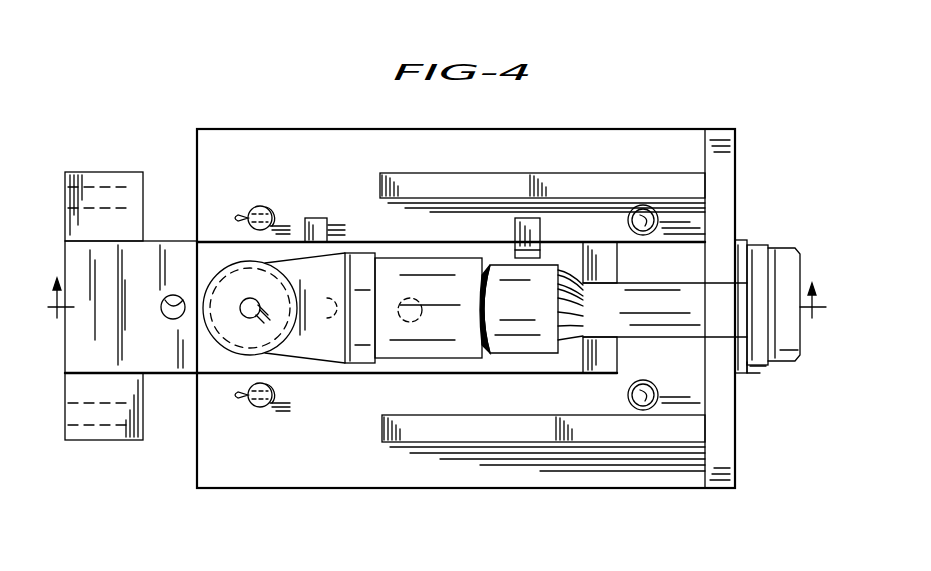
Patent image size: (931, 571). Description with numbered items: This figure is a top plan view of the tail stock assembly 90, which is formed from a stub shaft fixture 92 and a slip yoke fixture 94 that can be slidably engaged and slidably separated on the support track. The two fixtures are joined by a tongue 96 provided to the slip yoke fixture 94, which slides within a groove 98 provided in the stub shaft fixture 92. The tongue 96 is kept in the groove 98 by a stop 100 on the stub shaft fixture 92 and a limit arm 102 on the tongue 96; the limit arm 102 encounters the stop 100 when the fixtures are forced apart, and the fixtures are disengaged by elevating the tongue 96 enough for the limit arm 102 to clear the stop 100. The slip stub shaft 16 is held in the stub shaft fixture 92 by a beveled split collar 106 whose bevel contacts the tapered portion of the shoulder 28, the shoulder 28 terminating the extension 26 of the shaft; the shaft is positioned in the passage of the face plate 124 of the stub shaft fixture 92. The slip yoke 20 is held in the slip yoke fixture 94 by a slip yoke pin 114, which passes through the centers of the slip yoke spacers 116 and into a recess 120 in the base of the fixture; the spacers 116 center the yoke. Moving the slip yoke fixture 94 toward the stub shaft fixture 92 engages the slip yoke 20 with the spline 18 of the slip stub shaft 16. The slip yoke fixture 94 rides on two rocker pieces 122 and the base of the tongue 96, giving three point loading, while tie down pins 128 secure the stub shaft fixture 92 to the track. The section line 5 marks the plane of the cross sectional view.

The tail stock assembly 90 is at (188, 76).
The stub shaft fixture 92 is at (345, 492).
The slip yoke fixture 94 is at (122, 170).
The tongue 96 is at (550, 366).
The groove 98 is at (608, 360).
The stop 100 is at (315, 218).
The limit arm 102 is at (515, 228).
The beveled split collar 106 is at (742, 370).
The slip yoke pin 114 is at (243, 310).
The slip yoke spacer 116 is at (285, 345).
The recess 120 is at (178, 296).
The rocker piece 122 is at (140, 172).
The face plate 124 is at (738, 158).
The tie down pin 128 is at (262, 206).
The slip yoke 20 is at (527, 303).
The spline 18 is at (577, 297).
The slip stub shaft 16 is at (670, 332).
The shoulder 28 is at (768, 280).
The extension 26 is at (785, 266).
The section line 5- 5 is at (436, 314).